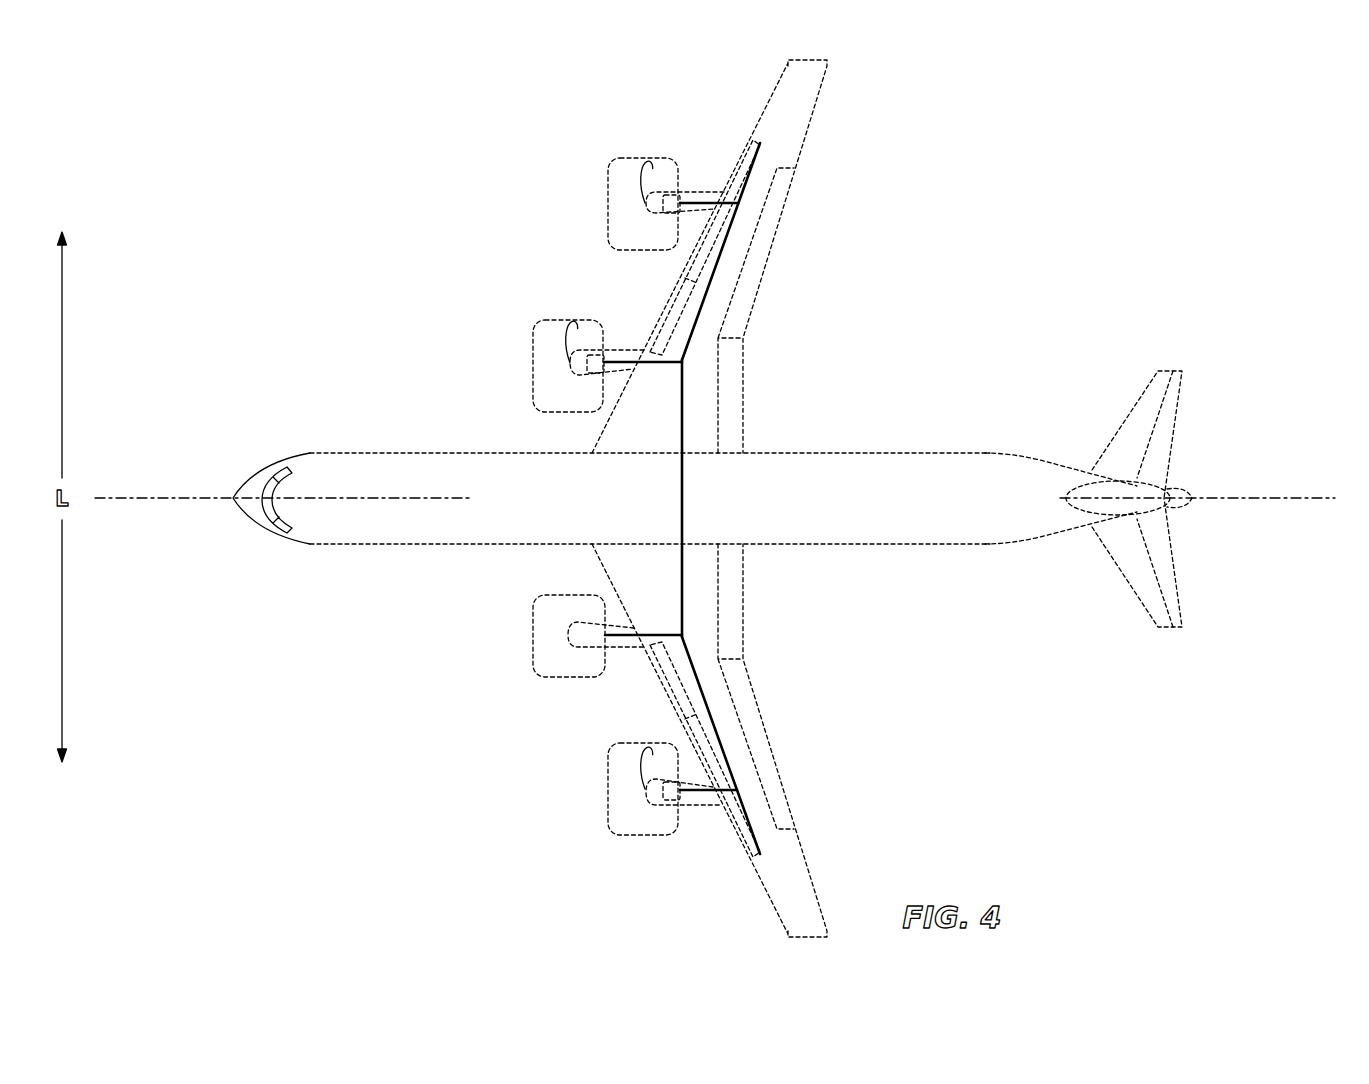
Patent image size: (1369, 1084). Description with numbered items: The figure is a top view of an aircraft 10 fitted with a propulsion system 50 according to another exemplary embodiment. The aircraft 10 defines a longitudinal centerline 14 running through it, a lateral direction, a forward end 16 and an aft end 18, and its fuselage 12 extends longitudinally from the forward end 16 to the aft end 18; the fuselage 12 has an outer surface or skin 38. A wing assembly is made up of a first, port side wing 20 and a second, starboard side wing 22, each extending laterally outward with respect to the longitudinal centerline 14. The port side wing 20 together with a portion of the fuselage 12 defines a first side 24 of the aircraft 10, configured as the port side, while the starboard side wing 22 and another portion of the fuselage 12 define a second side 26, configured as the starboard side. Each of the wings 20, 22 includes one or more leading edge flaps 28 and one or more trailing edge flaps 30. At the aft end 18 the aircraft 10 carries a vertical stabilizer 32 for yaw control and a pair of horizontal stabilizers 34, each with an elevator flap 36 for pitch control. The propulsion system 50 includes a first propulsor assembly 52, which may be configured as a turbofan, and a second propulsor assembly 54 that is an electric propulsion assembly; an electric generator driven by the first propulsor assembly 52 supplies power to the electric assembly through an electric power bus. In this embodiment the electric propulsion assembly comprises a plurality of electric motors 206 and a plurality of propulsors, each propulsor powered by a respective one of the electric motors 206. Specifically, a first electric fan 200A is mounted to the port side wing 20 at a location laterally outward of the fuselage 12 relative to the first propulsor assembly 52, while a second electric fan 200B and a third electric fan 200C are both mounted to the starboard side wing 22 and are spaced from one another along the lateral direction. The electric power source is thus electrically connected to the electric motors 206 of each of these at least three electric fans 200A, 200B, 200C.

The aircraft 10 is at (968, 184).
The fuselage 12 is at (313, 525).
The longitudinal centerline 14 is at (160, 500).
The forward end 16 is at (218, 543).
The aft end 18 is at (1117, 574).
The first, port side wing 20 is at (720, 740).
The second, starboard side wing 22 is at (795, 118).
The first side 24 is at (564, 727).
The second side 26 is at (512, 280).
The leading edge flaps 28 is at (688, 738).
The trailing edge flaps 30 is at (778, 770).
The vertical stabilizer 32 is at (1183, 506).
The horizontal stabilizers 34 is at (1162, 484).
The elevator flap 36 is at (1170, 415).
The outer surface or skin 38 is at (912, 513).
The propulsion system 50 is at (452, 176).
The first propulsor assembly 52 is at (533, 642).
The second propulsor assembly 54 is at (544, 190).
The first electric fan 200A is at (633, 836).
The second electric fan 200B is at (578, 318).
The third electric fan 200C is at (634, 158).
The electric motors 206 is at (670, 194).